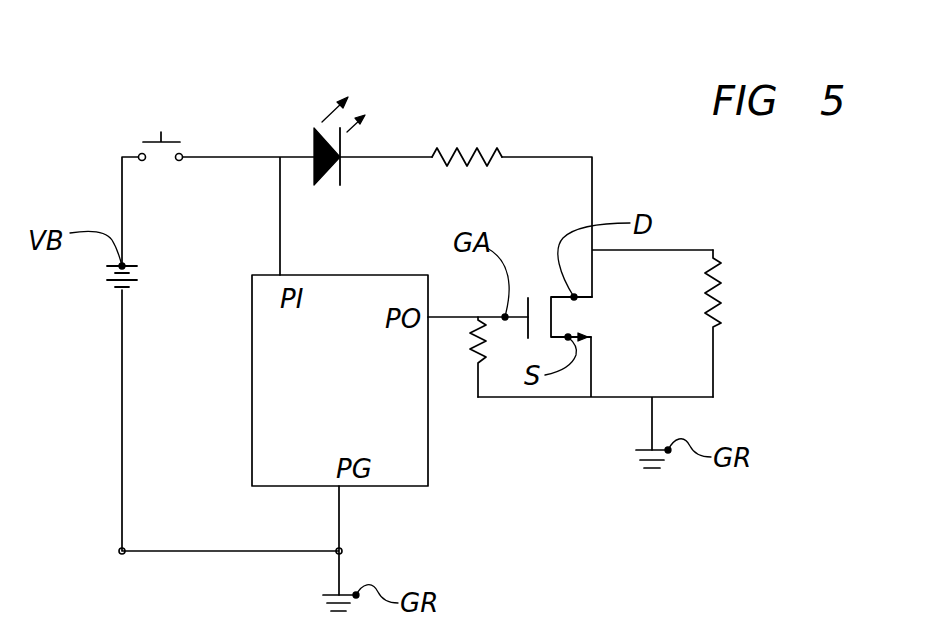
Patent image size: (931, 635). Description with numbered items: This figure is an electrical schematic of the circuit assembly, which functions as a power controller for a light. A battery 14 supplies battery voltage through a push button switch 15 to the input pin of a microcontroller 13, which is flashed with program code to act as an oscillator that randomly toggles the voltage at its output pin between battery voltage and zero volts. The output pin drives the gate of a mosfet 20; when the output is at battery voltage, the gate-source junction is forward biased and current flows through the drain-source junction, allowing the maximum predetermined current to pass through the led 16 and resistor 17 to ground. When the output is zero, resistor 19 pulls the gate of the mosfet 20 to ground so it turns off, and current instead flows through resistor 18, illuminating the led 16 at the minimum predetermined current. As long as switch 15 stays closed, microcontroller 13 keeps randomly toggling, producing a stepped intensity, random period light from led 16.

The microcontroller 13 is at (410, 471).
The battery 14 is at (107, 280).
The switch 15 is at (170, 142).
The led 16 is at (313, 135).
The resistor 17 is at (483, 150).
The resistor 18 is at (719, 312).
The resistor 19 is at (475, 369).
The mosfet 20 is at (551, 308).